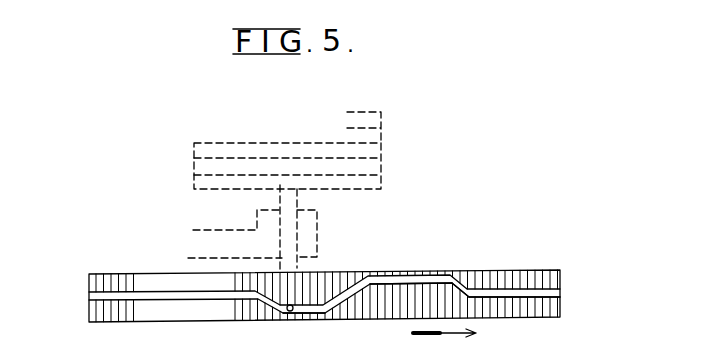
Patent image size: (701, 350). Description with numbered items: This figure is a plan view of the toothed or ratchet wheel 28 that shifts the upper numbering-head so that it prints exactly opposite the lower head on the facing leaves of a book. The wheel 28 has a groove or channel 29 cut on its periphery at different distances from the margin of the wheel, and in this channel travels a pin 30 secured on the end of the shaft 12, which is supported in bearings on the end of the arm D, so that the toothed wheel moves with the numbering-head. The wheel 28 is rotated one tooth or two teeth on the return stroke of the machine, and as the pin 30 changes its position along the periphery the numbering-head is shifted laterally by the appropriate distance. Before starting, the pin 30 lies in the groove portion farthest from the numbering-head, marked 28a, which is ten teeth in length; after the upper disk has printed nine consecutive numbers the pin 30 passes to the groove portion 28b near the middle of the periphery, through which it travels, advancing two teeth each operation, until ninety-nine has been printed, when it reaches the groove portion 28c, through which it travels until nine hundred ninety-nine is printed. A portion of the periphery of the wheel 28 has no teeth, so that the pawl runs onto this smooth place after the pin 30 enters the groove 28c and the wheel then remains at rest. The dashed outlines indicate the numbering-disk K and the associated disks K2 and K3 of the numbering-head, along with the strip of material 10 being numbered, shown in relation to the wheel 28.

The strip 10 is at (95, 296).
The shaft 12 is at (283, 268).
The toothed wheel 28 is at (210, 293).
The groove farthest from the numbering-head 28a is at (322, 309).
The middle groove 28b is at (545, 291).
The groove for hundreds 28c is at (433, 280).
The groove or channel 29 is at (485, 292).
The pin 30 is at (290, 312).
The arm D is at (218, 240).
The numbering disk K is at (381, 143).
The tool block second layer K2 is at (382, 167).
The tool block third layer K3 is at (397, 184).